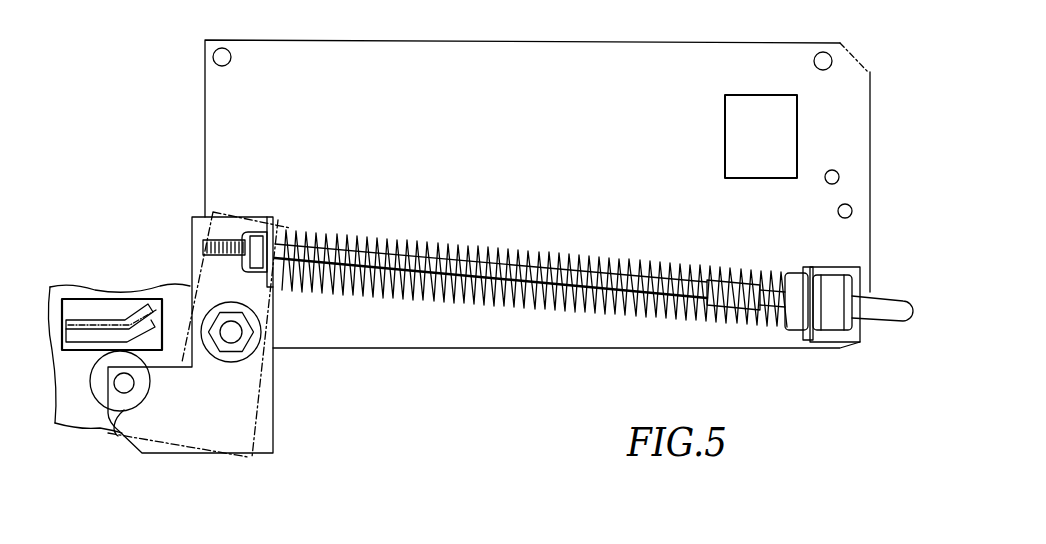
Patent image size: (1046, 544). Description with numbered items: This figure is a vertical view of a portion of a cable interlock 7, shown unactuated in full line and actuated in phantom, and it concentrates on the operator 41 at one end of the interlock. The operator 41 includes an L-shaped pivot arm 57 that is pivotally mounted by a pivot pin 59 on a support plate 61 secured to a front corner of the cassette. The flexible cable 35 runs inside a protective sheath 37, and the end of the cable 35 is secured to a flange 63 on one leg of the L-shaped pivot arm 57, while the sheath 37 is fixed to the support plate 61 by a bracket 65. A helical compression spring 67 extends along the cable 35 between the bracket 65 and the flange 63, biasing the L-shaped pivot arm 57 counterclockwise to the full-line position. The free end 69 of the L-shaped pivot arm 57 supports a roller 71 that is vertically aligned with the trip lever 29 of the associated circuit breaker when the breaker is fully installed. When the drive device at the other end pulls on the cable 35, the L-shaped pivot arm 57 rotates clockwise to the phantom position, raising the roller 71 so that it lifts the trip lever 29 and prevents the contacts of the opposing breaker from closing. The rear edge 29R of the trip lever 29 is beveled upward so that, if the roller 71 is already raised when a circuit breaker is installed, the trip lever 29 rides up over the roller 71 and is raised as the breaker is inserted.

The support plate 61 is at (640, 48).
The operator 41 is at (470, 306).
The flange 63 is at (273, 227).
The helical compression spring 67 is at (503, 250).
The flexible cable 35 is at (510, 278).
The bracket 65 is at (852, 270).
The protective sheath 37 is at (893, 299).
The cable interlock 7 is at (878, 350).
The trip lever 29 is at (72, 300).
The rear edge 29R is at (143, 300).
The pivot pin 59 is at (240, 334).
The L-shaped pivot arm 57 is at (266, 434).
The roller 71 is at (100, 396).
The free end 69 is at (113, 433).